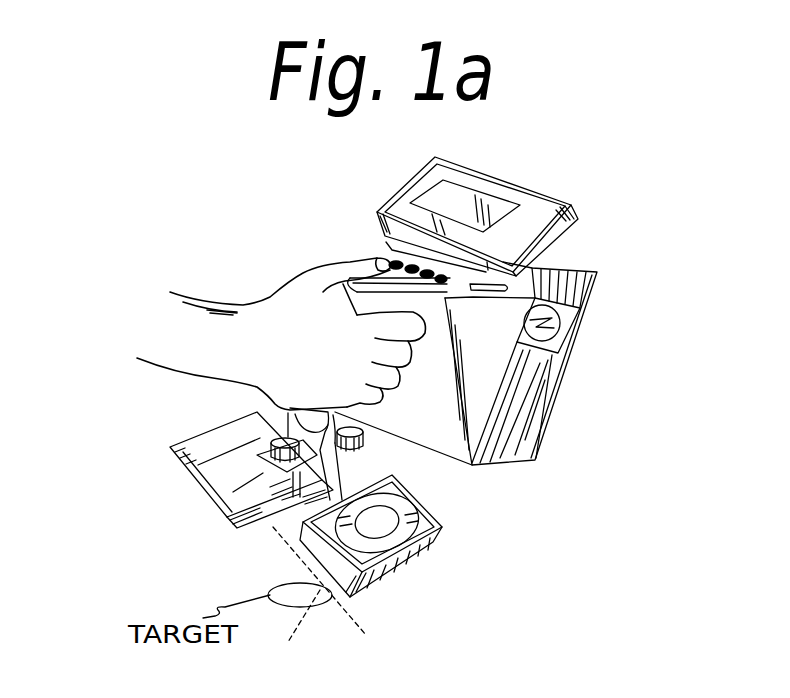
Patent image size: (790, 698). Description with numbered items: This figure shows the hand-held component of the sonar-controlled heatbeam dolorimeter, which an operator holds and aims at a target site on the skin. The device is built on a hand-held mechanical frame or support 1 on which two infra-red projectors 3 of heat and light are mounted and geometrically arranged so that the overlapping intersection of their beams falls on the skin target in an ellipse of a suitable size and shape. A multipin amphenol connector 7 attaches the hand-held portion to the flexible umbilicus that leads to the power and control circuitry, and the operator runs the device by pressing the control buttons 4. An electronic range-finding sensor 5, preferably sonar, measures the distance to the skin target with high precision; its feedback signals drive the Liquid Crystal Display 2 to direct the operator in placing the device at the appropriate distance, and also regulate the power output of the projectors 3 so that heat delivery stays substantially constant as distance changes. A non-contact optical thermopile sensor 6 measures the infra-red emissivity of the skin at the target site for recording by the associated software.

The hand-held mechanical frame or support 1 is at (283, 406).
The Liquid Crystal Display 2 is at (377, 210).
The infra-red projectors 3 is at (290, 545).
The control buttons 4 is at (450, 298).
The electronic range-finding sensor 5 is at (203, 434).
The non-contact optical thermopile sensor 6 is at (366, 445).
The multipin amphenol connector 7 is at (560, 303).